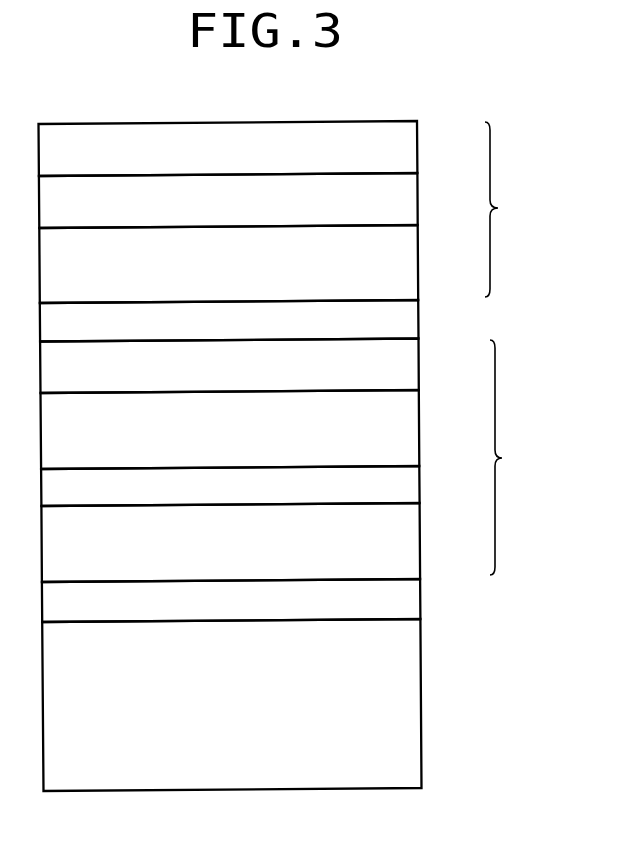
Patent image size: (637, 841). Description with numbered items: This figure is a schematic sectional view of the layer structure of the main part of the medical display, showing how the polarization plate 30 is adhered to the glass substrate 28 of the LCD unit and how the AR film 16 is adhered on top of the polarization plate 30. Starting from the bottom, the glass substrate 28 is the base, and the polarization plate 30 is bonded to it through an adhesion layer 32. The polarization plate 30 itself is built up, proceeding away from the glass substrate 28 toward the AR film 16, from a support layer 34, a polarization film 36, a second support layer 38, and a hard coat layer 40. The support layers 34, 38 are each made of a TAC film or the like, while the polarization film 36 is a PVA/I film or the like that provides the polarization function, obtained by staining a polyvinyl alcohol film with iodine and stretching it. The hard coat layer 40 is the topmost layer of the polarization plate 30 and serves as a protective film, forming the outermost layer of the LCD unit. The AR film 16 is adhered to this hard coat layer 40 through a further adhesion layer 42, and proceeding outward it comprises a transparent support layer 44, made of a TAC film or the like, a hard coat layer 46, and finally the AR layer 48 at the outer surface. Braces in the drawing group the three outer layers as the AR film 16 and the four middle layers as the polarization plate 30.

The AR film 16 is at (510, 209).
The glass substrate 28 is at (410, 669).
The polarization plate 30 is at (517, 457).
The adhesion layer 32 is at (410, 606).
The support layer 34 is at (410, 542).
The polarization film 36 is at (410, 486).
The support layer 38 is at (410, 430).
The hard coat layer 40 is at (410, 366).
The adhesion layer 42 is at (410, 321).
The transparent support layer 44 is at (410, 263).
The hard coat layer 46 is at (410, 199).
The AR layer 48 is at (410, 146).